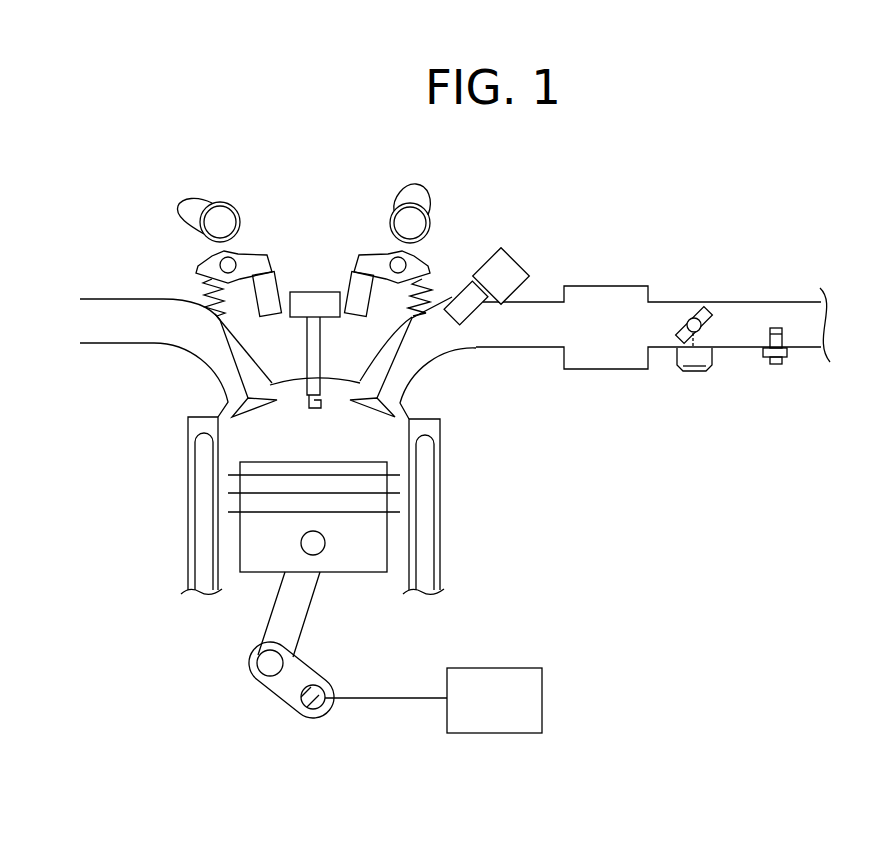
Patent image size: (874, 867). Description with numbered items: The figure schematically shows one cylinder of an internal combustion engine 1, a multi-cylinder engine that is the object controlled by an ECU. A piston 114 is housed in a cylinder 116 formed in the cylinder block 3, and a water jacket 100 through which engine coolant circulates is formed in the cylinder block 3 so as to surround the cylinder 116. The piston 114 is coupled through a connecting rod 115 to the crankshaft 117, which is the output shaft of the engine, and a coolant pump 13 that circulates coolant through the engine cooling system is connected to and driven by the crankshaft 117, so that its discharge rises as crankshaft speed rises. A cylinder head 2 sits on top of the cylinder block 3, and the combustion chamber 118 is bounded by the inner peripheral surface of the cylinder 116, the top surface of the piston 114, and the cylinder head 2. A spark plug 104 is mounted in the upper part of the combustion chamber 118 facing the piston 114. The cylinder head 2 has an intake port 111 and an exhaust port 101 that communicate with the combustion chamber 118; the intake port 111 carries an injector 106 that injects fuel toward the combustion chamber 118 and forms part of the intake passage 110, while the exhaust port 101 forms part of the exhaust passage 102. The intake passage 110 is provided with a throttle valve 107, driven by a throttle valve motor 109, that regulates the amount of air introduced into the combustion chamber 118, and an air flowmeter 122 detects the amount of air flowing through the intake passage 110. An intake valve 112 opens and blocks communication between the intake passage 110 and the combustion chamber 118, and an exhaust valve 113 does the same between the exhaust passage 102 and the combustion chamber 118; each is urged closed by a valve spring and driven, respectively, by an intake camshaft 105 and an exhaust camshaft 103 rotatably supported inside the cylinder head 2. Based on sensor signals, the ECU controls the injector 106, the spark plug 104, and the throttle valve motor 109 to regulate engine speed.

The internal combustion engine 1 is at (158, 583).
The cylinder head 2 is at (282, 383).
The cylinder block 3 is at (277, 503).
The coolant pump 13 is at (515, 663).
The water jacket 100 is at (200, 460).
The exhaust port 101 is at (186, 356).
The exhaust passage 102 is at (114, 342).
The exhaust camshaft 103 is at (217, 231).
The spark plug 104 is at (315, 347).
The intake camshaft 105 is at (418, 220).
The injector 106 is at (518, 268).
The throttle valve 107 is at (707, 313).
The throttle valve motor 109 is at (682, 357).
The intake passage 110 is at (520, 346).
The intake port 111 is at (420, 360).
The intake valve 112 is at (373, 410).
The exhaust valve 113 is at (257, 408).
The piston 114 is at (362, 563).
The connecting rod 115 is at (297, 632).
The cylinder 116 is at (220, 578).
The crankshaft 117 is at (297, 702).
The combustion chamber 118 is at (313, 430).
The air flowmeter 122 is at (767, 356).